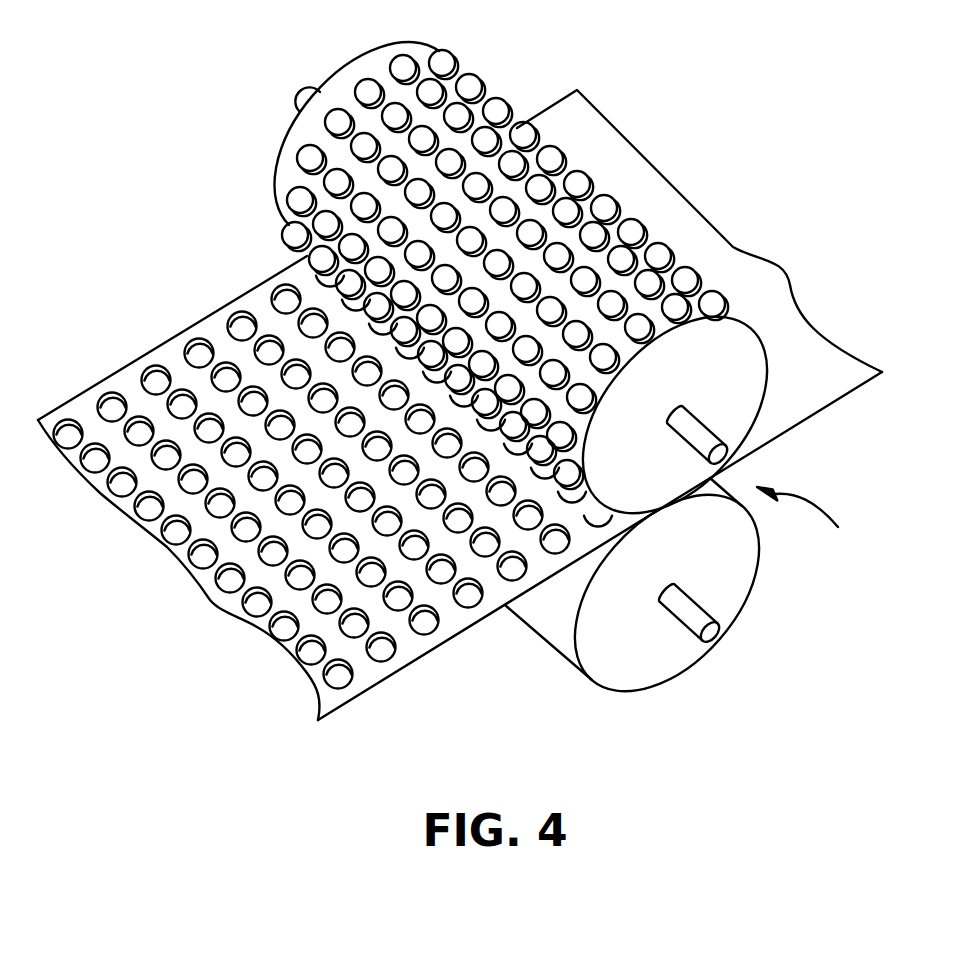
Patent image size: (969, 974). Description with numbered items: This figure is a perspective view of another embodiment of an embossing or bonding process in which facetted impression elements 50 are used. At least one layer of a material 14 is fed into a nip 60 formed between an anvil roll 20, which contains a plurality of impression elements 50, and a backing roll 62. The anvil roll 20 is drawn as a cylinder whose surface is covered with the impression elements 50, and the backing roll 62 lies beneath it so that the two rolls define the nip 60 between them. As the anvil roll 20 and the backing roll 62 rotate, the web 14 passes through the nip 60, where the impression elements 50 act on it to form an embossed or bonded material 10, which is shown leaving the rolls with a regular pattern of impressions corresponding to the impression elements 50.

The embossed or bonded material 10 is at (84, 406).
The material 14 is at (610, 138).
The anvil roll 20 is at (543, 295).
The impression elements 50 is at (312, 160).
The nip 60 is at (818, 526).
The backing roll 62 is at (730, 583).